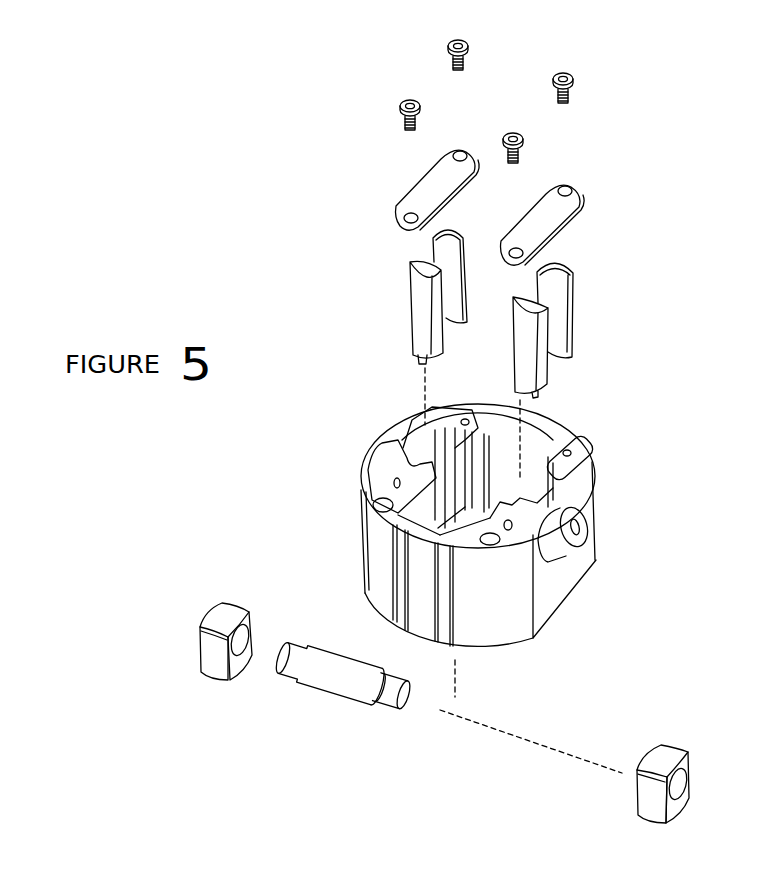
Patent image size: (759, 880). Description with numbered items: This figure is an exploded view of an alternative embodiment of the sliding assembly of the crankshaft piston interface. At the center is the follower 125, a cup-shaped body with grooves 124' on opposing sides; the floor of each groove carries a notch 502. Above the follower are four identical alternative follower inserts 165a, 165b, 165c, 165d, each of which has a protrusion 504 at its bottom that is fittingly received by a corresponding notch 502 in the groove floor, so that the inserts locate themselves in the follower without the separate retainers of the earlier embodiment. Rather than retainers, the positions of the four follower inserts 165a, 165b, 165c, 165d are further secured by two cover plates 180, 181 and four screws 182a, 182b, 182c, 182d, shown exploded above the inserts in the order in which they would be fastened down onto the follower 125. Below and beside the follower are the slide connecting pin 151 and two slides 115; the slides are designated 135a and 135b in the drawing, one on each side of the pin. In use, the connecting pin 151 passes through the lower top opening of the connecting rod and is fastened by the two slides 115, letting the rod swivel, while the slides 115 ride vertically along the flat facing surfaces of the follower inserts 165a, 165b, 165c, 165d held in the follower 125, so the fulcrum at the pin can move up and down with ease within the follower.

The slide 115 is at (448, 681).
The grooves of follower 124' is at (485, 510).
The follower 125 is at (485, 516).
The mounting block 135a is at (675, 743).
The mounting block 135b is at (240, 600).
The slide connecting pin 151 is at (340, 700).
The follower insert 165a is at (537, 390).
The follower insert 165b is at (572, 357).
The follower insert 165c is at (423, 364).
The follower insert 165d is at (463, 322).
The cover plate 180 is at (580, 202).
The cover plate 181 is at (393, 210).
The screw 182a is at (407, 130).
The screw 182b is at (522, 162).
The screw 182c is at (572, 75).
The screw 182d is at (467, 70).
The notch 502 is at (458, 512).
The protrusion 504 is at (421, 386).